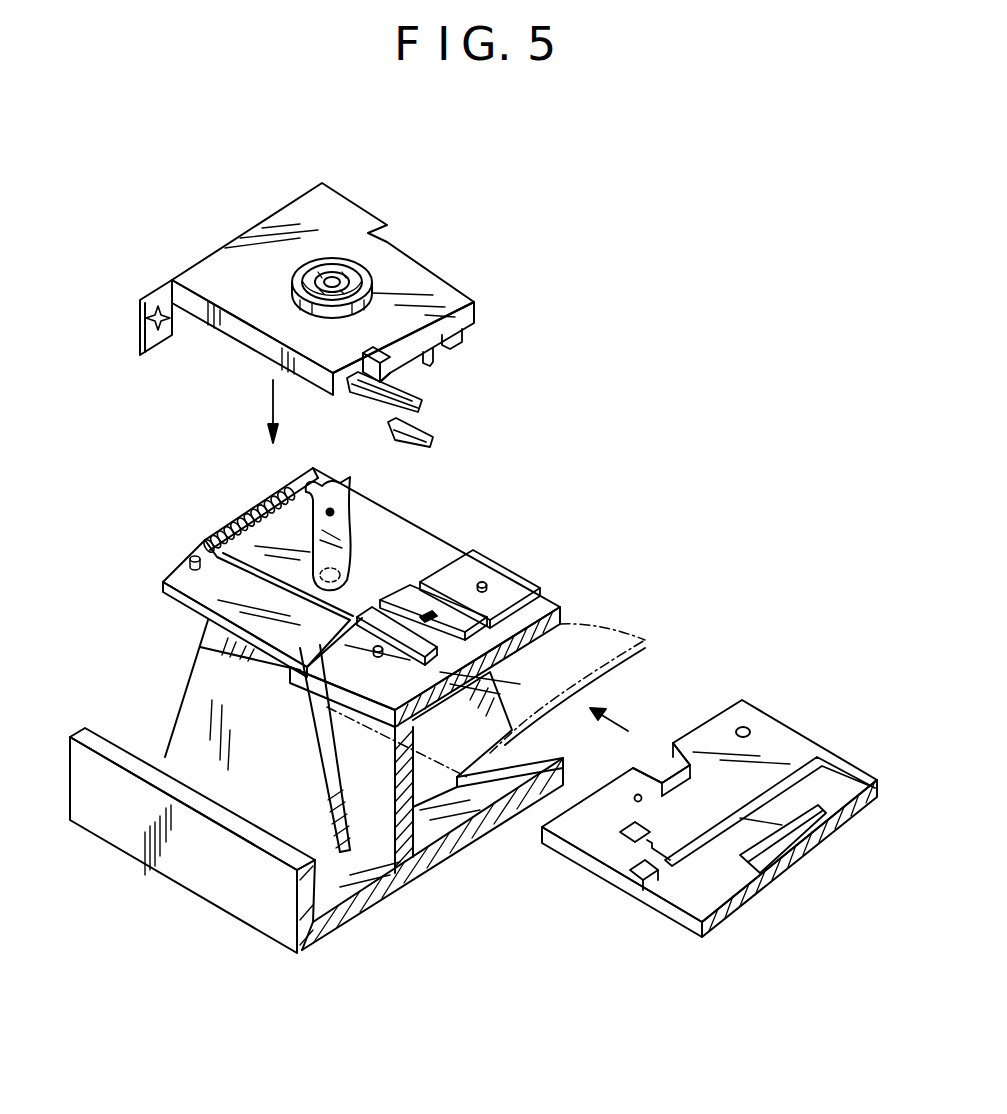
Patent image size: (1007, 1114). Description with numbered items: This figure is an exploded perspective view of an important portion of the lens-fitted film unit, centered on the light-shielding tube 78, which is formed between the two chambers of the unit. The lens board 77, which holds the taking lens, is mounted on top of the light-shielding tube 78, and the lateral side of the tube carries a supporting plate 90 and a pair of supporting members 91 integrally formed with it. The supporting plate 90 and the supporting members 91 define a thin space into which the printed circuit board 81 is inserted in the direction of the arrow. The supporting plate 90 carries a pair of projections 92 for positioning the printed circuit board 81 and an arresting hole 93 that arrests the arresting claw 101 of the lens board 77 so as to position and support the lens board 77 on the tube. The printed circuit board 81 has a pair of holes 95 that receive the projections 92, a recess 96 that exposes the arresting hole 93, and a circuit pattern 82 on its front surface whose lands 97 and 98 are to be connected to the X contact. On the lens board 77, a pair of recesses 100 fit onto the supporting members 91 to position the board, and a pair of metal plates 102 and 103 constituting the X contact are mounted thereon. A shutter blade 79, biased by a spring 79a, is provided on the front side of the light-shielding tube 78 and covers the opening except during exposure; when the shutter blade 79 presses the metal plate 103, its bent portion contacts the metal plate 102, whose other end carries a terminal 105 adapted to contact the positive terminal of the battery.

The lens board 77 is at (378, 197).
The terminal 105 is at (140, 333).
The recesses 100 is at (453, 332).
The arresting claw 101 is at (428, 362).
The metal plate 103 is at (415, 390).
The metal plate 102 is at (433, 437).
The supporting plate 90 is at (540, 613).
The shutter blade 79 is at (323, 483).
The spring 79a is at (233, 522).
The projections 92 is at (486, 583).
The supporting members 91 is at (492, 616).
The arresting hole 93 is at (410, 612).
The light-shielding tube 78 is at (168, 711).
The printed circuit board 81 is at (783, 703).
The circuit pattern 82 is at (842, 777).
The holes 95 is at (633, 802).
The recess 96 is at (660, 770).
The land 97 is at (645, 830).
The land 98 is at (640, 876).